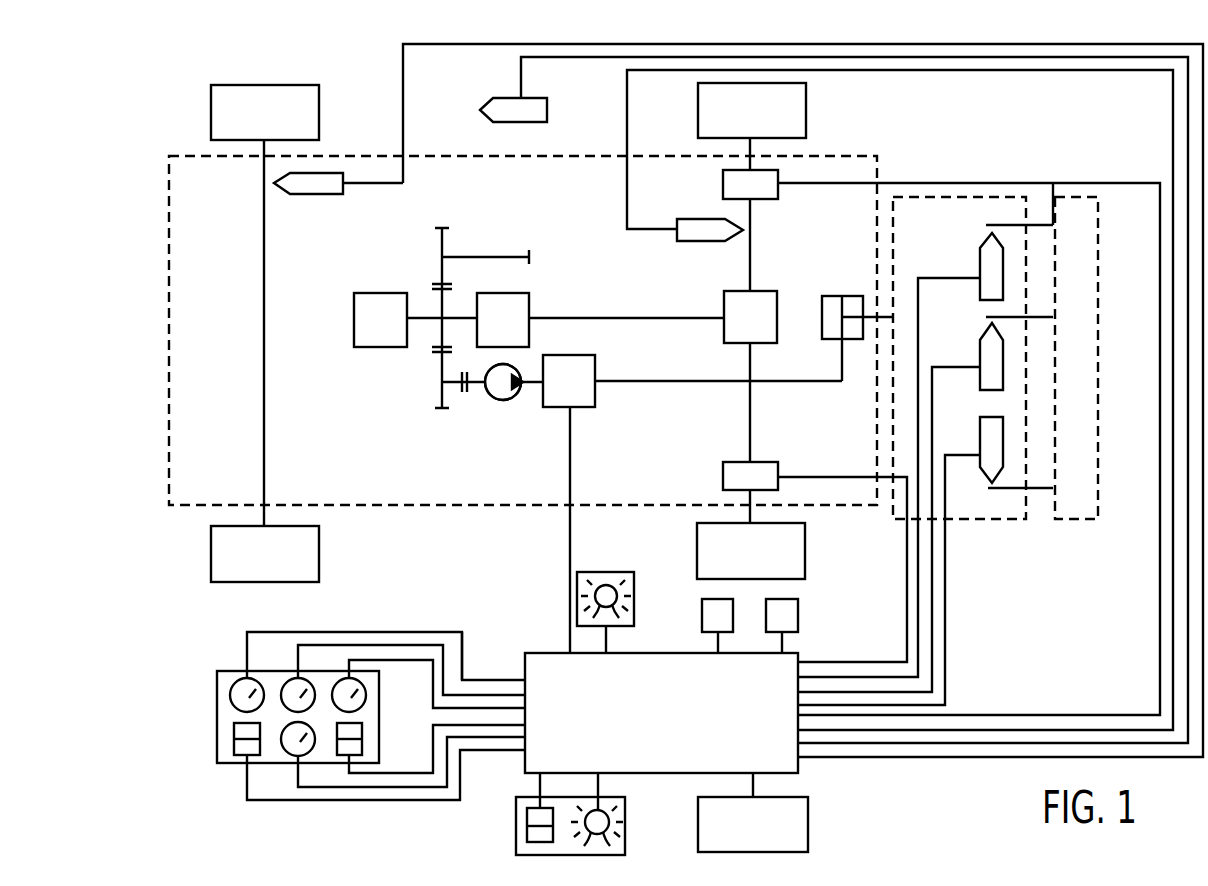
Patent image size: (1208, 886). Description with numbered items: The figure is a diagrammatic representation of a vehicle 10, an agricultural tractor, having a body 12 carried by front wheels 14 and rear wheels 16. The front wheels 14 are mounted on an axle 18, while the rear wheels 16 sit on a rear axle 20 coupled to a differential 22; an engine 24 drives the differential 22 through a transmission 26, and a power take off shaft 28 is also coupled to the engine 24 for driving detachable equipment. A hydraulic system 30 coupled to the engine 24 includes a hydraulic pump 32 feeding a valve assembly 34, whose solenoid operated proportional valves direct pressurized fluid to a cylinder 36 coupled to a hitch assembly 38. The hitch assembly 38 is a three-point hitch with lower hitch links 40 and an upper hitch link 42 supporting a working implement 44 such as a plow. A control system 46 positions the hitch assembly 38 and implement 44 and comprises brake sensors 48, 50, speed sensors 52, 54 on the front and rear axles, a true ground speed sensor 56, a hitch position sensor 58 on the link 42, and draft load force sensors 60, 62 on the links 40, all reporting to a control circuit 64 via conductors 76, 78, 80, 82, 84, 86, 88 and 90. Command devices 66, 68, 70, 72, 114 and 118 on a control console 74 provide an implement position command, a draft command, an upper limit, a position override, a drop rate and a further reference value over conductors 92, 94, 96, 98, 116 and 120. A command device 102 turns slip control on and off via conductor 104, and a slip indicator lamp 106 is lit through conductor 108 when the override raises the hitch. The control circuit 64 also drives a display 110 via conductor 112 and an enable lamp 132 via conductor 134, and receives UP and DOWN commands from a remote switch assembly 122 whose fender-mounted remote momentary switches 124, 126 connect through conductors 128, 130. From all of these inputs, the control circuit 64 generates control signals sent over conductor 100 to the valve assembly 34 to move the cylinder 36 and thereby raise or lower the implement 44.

The vehicle 10 is at (144, 158).
The body 12 is at (169, 335).
The front wheels 14 is at (237, 85).
The rear wheels 16 is at (698, 116).
The axle 18 is at (264, 260).
The rear axle 20 is at (750, 432).
The differential 22 is at (760, 291).
The engine 24 is at (366, 293).
The transmission 26 is at (515, 293).
The power take off shaft 28 is at (478, 257).
The hydraulic system 30 is at (472, 414).
The hydraulic pump 32 is at (517, 397).
The valve assembly 34 is at (588, 355).
The cylinder 36 is at (835, 296).
The hitch assembly 38 is at (921, 197).
The lower hitch links 40 is at (1043, 225).
The upper hitch link 42 is at (1040, 317).
The working implement 44 is at (1075, 197).
The control system 46 is at (466, 834).
The brake sensor 48 is at (723, 194).
The brake sensor 50 is at (723, 476).
The speed sensor 52 is at (325, 194).
The speed sensor 54 is at (692, 241).
The true ground speed sensor 56 is at (498, 122).
The hitch position sensor 58 is at (1003, 367).
The draft load force sensor 60 is at (1003, 278).
The draft load force sensor 62 is at (1003, 455).
The control circuit 64 is at (546, 653).
The command device 66 is at (274, 680).
The command device 68 is at (364, 680).
The command device 70 is at (283, 757).
The command device 72 is at (340, 757).
The control console 74 is at (227, 671).
The conductor 76 is at (973, 183).
The conductor 78 is at (826, 477).
The conductor 80 is at (403, 82).
The conductor 82 is at (627, 142).
The conductor 84 is at (521, 78).
The conductor 86 is at (934, 618).
The conductor 88 is at (922, 650).
The conductor 90 is at (947, 593).
The conductor 92 is at (408, 632).
The conductor 94 is at (488, 695).
The conductor 96 is at (393, 788).
The conductor 98 is at (494, 750).
The conductor 100 is at (570, 550).
The command device 102 is at (527, 838).
The conductor 104 is at (536, 787).
The slip indicator lamp 106 is at (613, 822).
The conductor 108 is at (601, 783).
The display 110 is at (808, 823).
The conductor 112 is at (758, 790).
The command device 114 is at (230, 697).
The conductor 116 is at (465, 642).
The command device 118 is at (234, 747).
The conductor 120 is at (432, 801).
The remote switch assembly 122 is at (813, 640).
The remote momentary switch 124 is at (702, 600).
The remote momentary switch 126 is at (798, 607).
The conductor 128 is at (717, 647).
The conductor 130 is at (800, 643).
The enable lamp 132 is at (598, 575).
The conductor 134 is at (608, 640).